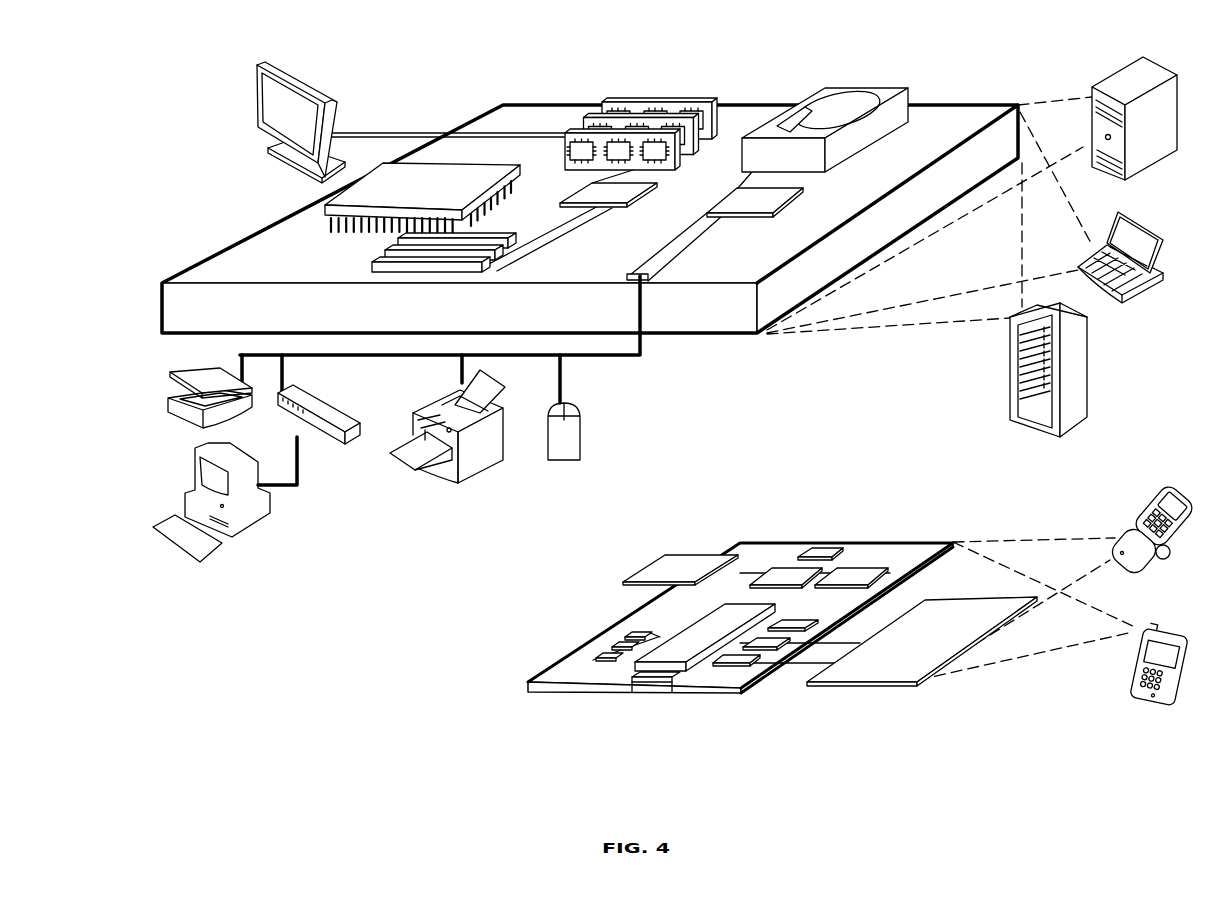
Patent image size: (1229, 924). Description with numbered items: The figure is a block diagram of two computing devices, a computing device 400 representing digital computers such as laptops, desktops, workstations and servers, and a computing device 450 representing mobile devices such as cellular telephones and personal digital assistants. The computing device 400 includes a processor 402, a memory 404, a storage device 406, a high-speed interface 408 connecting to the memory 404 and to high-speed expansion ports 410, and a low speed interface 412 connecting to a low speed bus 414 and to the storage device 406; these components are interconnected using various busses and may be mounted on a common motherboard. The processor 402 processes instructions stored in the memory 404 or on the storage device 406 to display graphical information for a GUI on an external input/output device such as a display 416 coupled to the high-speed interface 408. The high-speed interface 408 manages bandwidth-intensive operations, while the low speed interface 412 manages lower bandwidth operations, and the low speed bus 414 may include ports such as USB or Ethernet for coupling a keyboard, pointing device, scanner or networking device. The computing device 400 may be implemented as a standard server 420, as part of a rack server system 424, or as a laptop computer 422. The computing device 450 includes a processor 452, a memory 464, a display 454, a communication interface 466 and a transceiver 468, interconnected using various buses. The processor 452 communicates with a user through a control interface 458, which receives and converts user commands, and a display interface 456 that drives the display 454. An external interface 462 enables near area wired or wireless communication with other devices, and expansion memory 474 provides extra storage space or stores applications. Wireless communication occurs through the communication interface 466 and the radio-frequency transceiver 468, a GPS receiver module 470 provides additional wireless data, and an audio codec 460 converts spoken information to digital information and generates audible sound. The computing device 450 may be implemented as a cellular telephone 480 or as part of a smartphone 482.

The computing device 400 is at (437, 72).
The processor 402 is at (325, 212).
The memory 404 is at (623, 100).
The storage device 406 is at (822, 85).
The high-speed interface 408 is at (588, 193).
The high-speed expansion ports 410 is at (390, 252).
The low speed interface 412 is at (755, 197).
The low speed bus 414 is at (648, 281).
The display 416 is at (258, 65).
The standard server 420 is at (1092, 92).
The laptop computer 422 is at (1113, 213).
The rack server system 424 is at (1010, 388).
The computing device 450 is at (726, 515).
The processor 452 is at (663, 671).
The display 454 is at (918, 680).
The display interface 456 is at (745, 667).
The control interface 458 is at (773, 651).
The audio codec 460 is at (788, 632).
The external interface 462 is at (651, 683).
The memory 464 is at (607, 645).
The communication interface 466 is at (787, 575).
The transceiver 468 is at (852, 572).
The GPS receiver module 470 is at (830, 548).
The expansion memory 474 is at (664, 553).
The cellular telephone 480 is at (1156, 490).
The smartphone 482 is at (1140, 612).